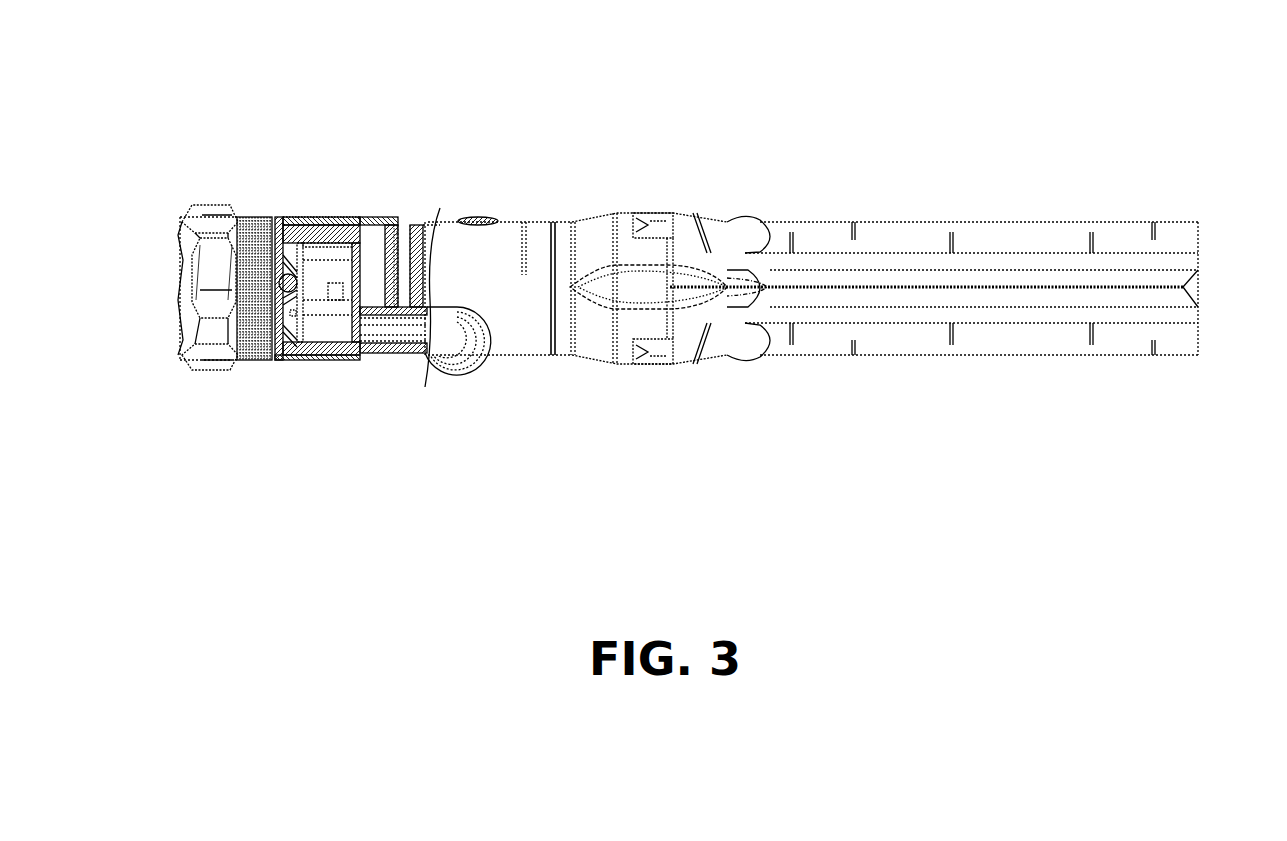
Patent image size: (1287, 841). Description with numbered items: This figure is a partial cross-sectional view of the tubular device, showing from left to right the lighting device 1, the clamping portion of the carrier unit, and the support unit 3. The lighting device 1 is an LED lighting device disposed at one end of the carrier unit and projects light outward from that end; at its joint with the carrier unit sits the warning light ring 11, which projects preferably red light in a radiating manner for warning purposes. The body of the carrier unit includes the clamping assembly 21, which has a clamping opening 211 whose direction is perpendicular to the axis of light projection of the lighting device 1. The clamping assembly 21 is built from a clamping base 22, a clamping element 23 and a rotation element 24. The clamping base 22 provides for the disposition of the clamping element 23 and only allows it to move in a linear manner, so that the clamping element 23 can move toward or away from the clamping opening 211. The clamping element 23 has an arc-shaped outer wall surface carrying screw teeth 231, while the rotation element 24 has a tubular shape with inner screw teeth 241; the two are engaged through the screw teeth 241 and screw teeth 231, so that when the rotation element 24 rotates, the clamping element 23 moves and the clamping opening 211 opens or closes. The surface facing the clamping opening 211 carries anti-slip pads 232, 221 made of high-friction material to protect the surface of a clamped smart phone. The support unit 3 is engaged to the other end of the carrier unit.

The lighting device 1 is at (200, 355).
The warning light ring 11 is at (250, 222).
The clamping assembly 21 is at (487, 98).
The clamping opening 211 is at (401, 282).
The clamping base 22 is at (422, 263).
The anti-slip pad 221 is at (428, 276).
The clamping element 23 is at (387, 263).
The screw teeth 231 is at (378, 218).
The anti-slip pad 232 is at (388, 288).
The rotation element 24 is at (330, 222).
The inner screw teeth 241 is at (303, 222).
The support unit 3 is at (467, 212).